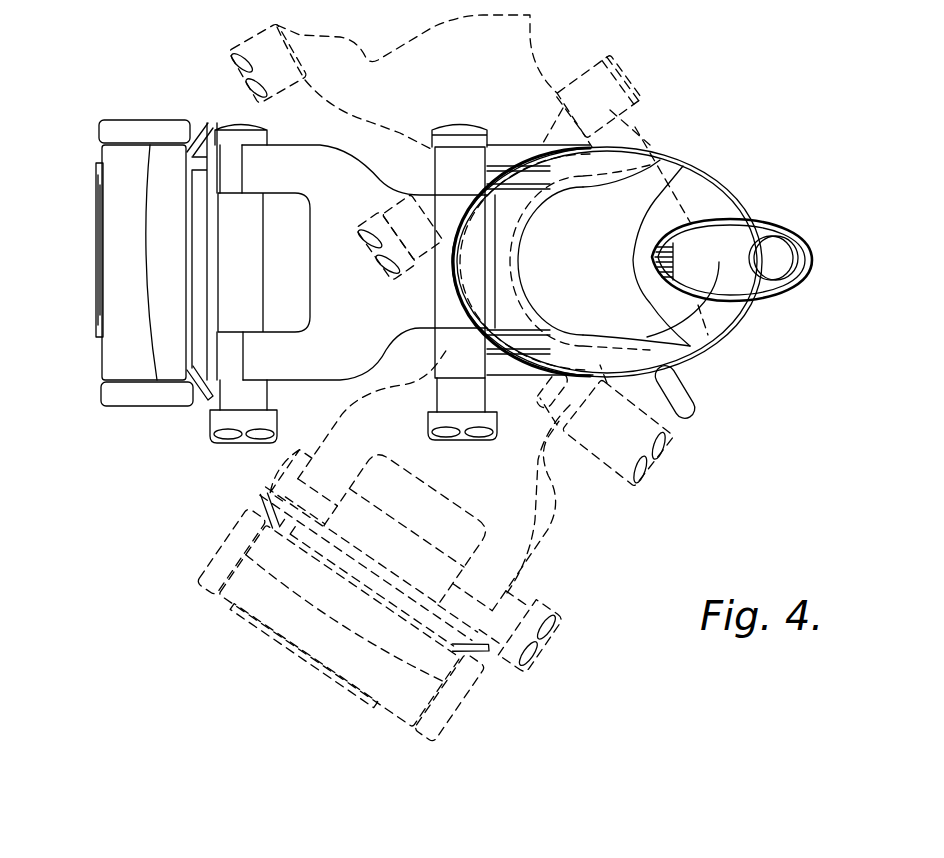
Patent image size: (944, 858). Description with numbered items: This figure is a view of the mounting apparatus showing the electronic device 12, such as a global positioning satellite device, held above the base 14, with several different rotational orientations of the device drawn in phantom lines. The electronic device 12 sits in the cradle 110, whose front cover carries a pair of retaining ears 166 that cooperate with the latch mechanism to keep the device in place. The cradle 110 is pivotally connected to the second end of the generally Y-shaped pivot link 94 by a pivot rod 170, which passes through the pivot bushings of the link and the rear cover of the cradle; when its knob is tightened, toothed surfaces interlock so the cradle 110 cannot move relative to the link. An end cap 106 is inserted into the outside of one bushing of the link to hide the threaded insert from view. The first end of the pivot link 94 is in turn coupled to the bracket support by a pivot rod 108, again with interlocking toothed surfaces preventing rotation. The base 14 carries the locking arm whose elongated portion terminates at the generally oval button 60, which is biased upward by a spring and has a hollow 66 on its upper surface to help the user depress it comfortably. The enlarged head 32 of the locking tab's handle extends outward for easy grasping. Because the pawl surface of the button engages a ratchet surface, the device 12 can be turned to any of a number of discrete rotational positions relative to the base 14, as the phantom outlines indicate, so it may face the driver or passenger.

The electronic device 12 is at (112, 360).
The base 14 is at (733, 181).
The enlarged head 32 is at (688, 402).
The button 60 is at (789, 237).
The hollow 66 is at (774, 270).
The pivot link 94 is at (343, 172).
The end cap 106 is at (263, 123).
The pivot rod 108 is at (490, 430).
The cradle 110 is at (203, 125).
The retaining ears 166 is at (127, 128).
The pivot rod 170 is at (213, 432).